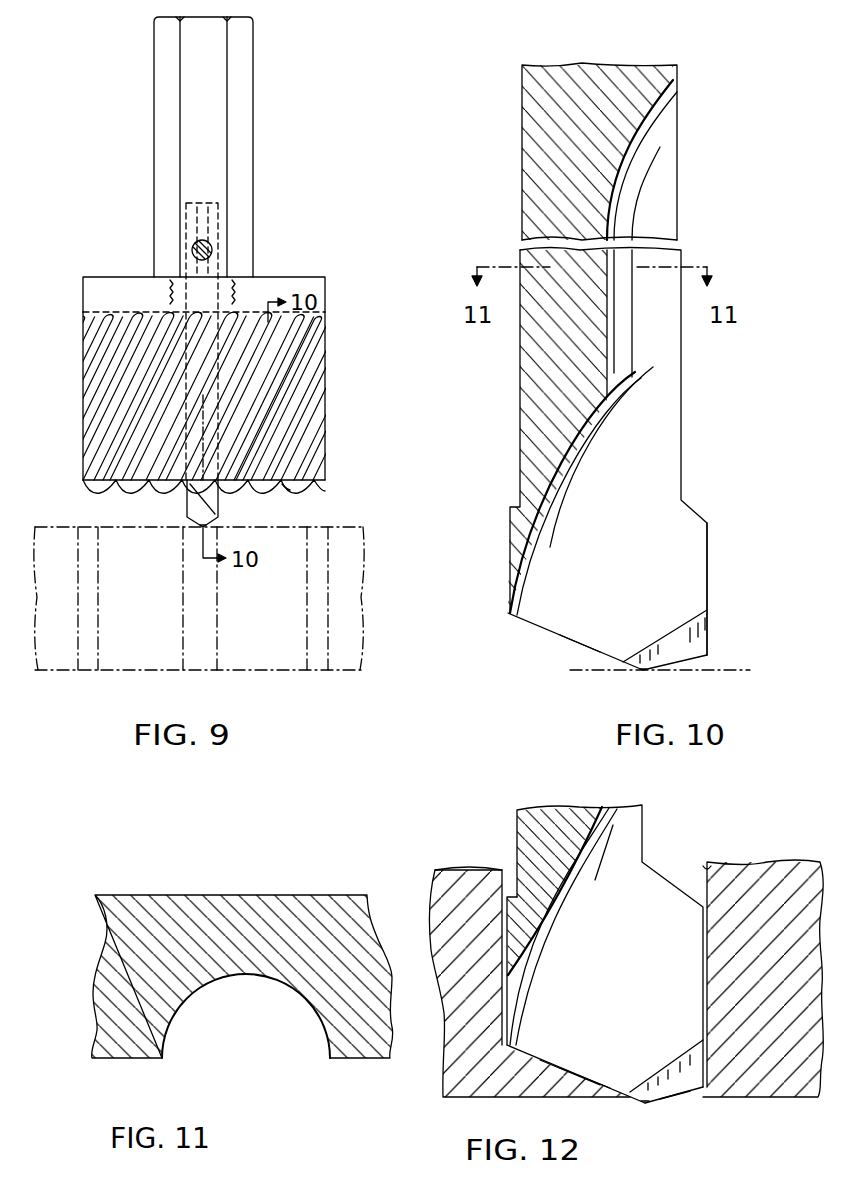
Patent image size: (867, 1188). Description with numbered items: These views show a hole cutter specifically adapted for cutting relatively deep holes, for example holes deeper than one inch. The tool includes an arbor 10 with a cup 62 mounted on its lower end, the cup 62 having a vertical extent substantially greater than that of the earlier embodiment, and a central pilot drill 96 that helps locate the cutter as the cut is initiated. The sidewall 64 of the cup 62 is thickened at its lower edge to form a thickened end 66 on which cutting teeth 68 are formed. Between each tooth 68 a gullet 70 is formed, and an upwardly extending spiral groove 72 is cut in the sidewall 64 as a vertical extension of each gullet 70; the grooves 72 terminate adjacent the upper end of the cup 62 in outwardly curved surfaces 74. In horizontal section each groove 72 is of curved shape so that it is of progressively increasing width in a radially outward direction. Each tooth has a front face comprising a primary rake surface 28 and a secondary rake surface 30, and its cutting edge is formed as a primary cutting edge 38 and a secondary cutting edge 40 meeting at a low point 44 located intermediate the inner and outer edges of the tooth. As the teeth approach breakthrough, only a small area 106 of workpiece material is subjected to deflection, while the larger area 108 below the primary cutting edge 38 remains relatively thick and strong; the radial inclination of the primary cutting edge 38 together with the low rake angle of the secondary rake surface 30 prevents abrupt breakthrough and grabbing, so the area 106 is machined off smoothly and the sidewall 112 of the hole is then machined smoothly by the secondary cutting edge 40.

In FIG. 9, the arbor 10 is at (247, 163).
In FIG. 9, the cup 62 is at (291, 277).
In FIG. 9, the sidewall 64 is at (307, 395).
In FIG. 10, the sidewall 64 is at (533, 205).
In FIG. 11, the sidewall 64 is at (333, 903).
In FIG. 9, the thickened end 66 is at (333, 489).
In FIG. 9, the cutting teeth 68 is at (282, 498).
In FIG. 10, the cutting teeth 68 is at (708, 563).
In FIG. 9, the gullet 70 is at (231, 493).
In FIG. 10, the gullet 70 is at (640, 423).
In FIG. 9, the spiral groove 72 is at (300, 345).
In FIG. 10, the spiral groove 72 is at (667, 195).
In FIG. 11, the spiral groove 72 is at (297, 1042).
In FIG. 10, the outwardly curved surfaces 74 is at (640, 128).
In FIG. 9, the pilot drill 96 is at (187, 518).
In FIG. 10, the primary rake surface 28 is at (552, 618).
In FIG. 12, the primary rake surface 28 is at (547, 1048).
In FIG. 10, the secondary rake surface 30 is at (702, 640).
In FIG. 12, the secondary rake surface 30 is at (688, 1060).
In FIG. 10, the primary cutting edge 38 is at (575, 648).
In FIG. 12, the primary cutting edge 38 is at (583, 1075).
In FIG. 10, the secondary cutting edge 40 is at (683, 663).
In FIG. 12, the secondary cutting edge 40 is at (697, 1093).
In FIG. 10, the low point 44 is at (645, 672).
In FIG. 12, the low point 44 is at (642, 1107).
In FIG. 12, the small area of workpiece material 106 is at (680, 1098).
In FIG. 12, the larger area of workpiece material 108 is at (572, 1078).
In FIG. 12, the sidewall of the hole 112 is at (701, 862).